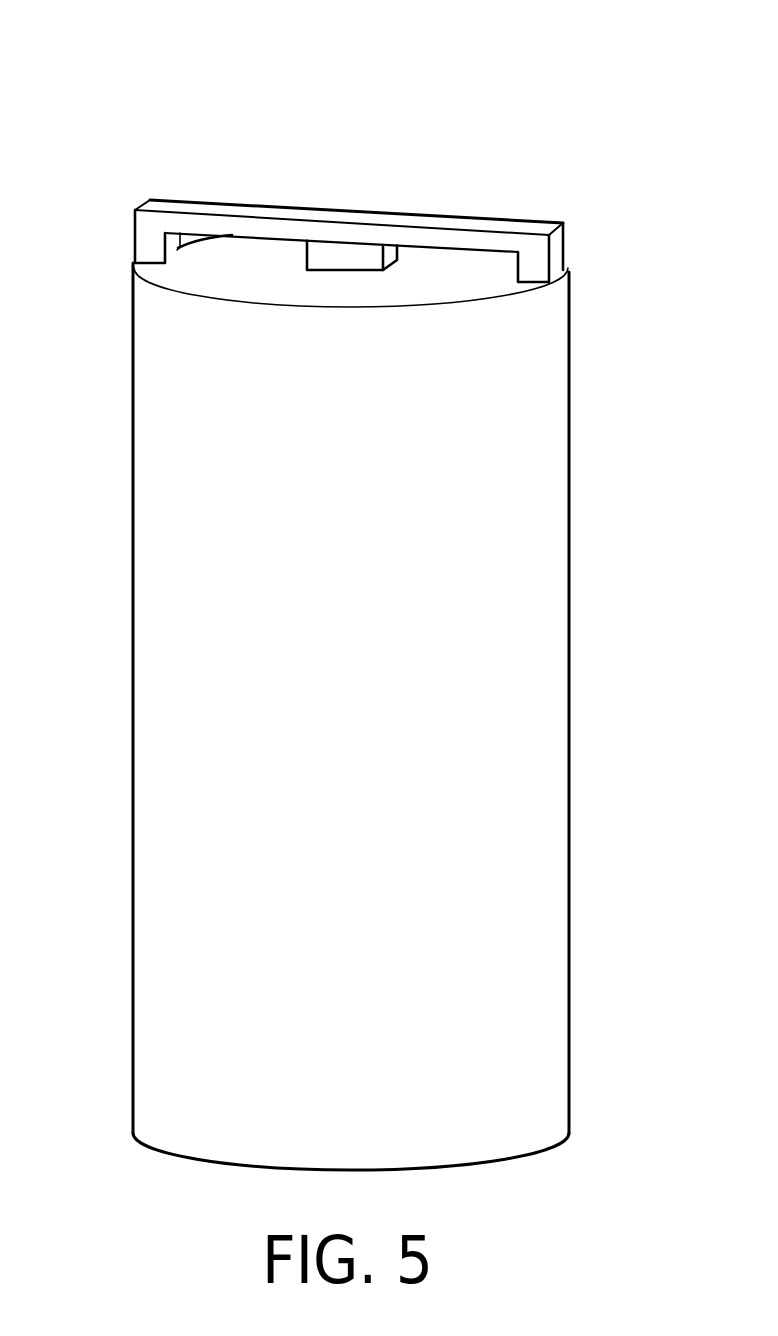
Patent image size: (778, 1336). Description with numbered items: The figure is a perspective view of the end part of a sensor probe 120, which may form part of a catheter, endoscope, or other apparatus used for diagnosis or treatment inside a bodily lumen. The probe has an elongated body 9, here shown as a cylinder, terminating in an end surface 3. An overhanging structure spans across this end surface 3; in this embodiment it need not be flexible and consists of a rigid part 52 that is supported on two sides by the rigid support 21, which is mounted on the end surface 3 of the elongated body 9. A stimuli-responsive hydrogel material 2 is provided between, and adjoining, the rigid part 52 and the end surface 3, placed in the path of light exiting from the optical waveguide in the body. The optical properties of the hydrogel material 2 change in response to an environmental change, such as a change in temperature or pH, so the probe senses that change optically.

The sensor probe 120 is at (147, 88).
The elongated body 9 is at (143, 448).
The end surface 3 is at (427, 275).
The stimuli-responsive hydrogel material 2 is at (343, 260).
The rigid part 52 is at (301, 227).
The rigid support 21 is at (150, 243).